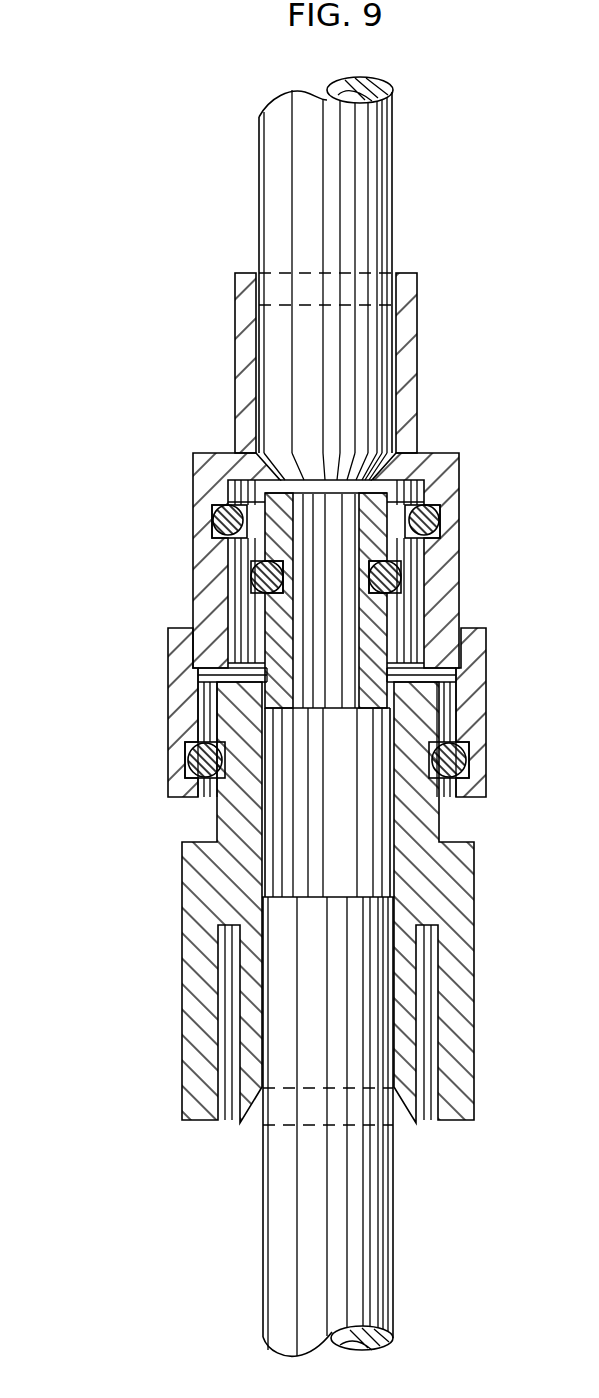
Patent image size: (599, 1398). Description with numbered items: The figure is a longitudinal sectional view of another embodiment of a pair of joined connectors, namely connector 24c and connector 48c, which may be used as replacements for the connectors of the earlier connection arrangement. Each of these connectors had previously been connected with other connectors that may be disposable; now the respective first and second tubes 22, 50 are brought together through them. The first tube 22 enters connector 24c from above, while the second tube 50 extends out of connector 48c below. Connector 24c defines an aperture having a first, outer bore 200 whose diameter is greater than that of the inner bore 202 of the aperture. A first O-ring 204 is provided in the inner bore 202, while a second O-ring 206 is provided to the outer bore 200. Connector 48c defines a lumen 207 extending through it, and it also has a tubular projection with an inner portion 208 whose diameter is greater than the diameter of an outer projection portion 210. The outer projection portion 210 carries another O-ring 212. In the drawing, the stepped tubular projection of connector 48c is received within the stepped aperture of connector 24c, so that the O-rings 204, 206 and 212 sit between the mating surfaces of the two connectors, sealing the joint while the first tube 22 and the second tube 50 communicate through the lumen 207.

The first tube 22 is at (366, 208).
The connector 24c is at (443, 572).
The first O-ring 204 is at (213, 520).
The O-ring 212 is at (203, 566).
The inner bore 202 is at (253, 585).
The outer projection portion 210 is at (372, 632).
The outer bore 200 is at (200, 682).
The inner portion 208 is at (408, 722).
The second O-ring 206 is at (187, 753).
The connector 48c is at (455, 885).
The lumen 207 is at (260, 825).
The second tube 50 is at (372, 1237).